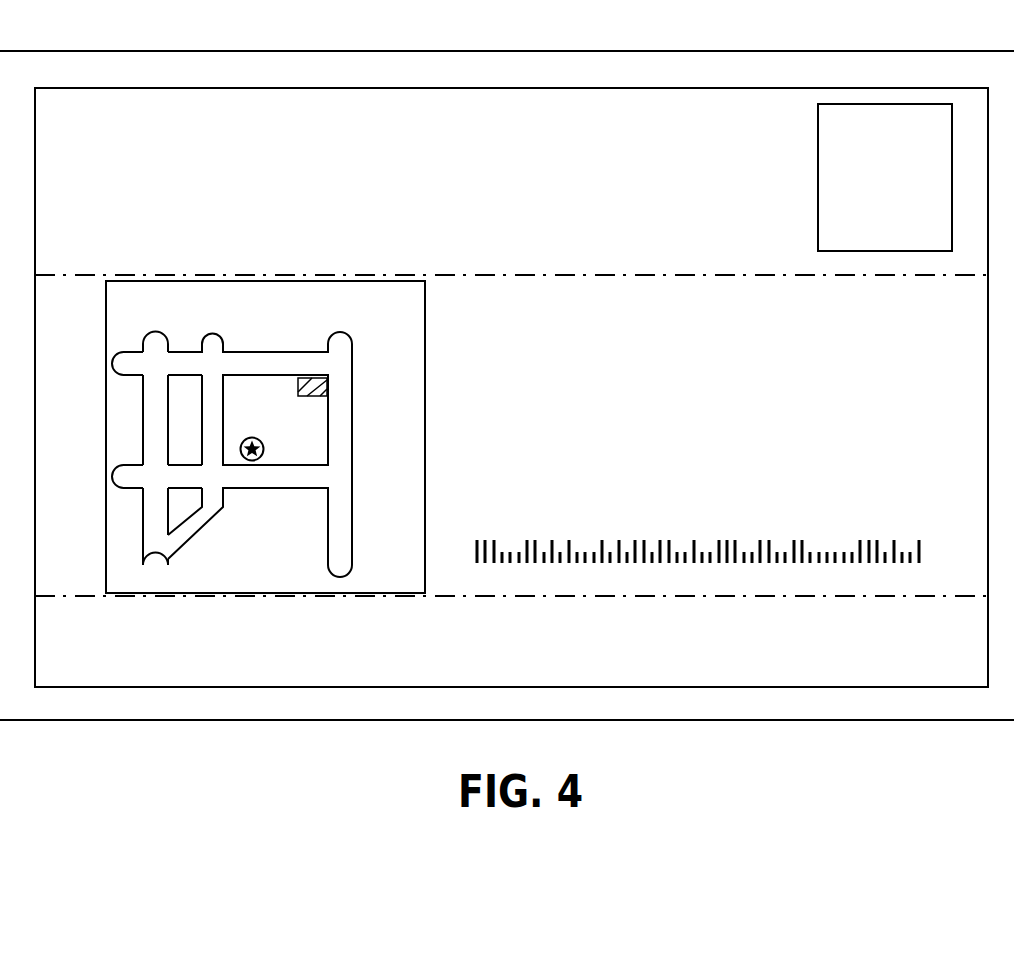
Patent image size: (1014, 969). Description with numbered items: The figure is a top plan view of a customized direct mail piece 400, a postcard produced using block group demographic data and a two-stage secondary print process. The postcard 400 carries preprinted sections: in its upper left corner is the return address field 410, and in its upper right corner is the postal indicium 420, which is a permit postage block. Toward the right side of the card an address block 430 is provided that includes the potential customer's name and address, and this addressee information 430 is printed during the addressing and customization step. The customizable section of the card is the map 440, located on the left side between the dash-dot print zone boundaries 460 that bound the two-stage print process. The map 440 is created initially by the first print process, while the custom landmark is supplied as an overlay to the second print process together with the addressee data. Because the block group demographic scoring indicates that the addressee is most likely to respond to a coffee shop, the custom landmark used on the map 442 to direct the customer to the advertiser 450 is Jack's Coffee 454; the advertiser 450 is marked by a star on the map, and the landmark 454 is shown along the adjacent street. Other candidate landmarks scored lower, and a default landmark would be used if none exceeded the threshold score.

The customized direct mail piece 400 is at (332, 660).
The return address field 410 is at (300, 145).
The postal indicium 420 is at (818, 205).
The address block 430 is at (700, 412).
The map 440 is at (147, 273).
The map 442 is at (158, 333).
The advertiser 450 is at (241, 445).
The landmark 454 is at (385, 412).
The print zone boundaries 460 is at (605, 272).